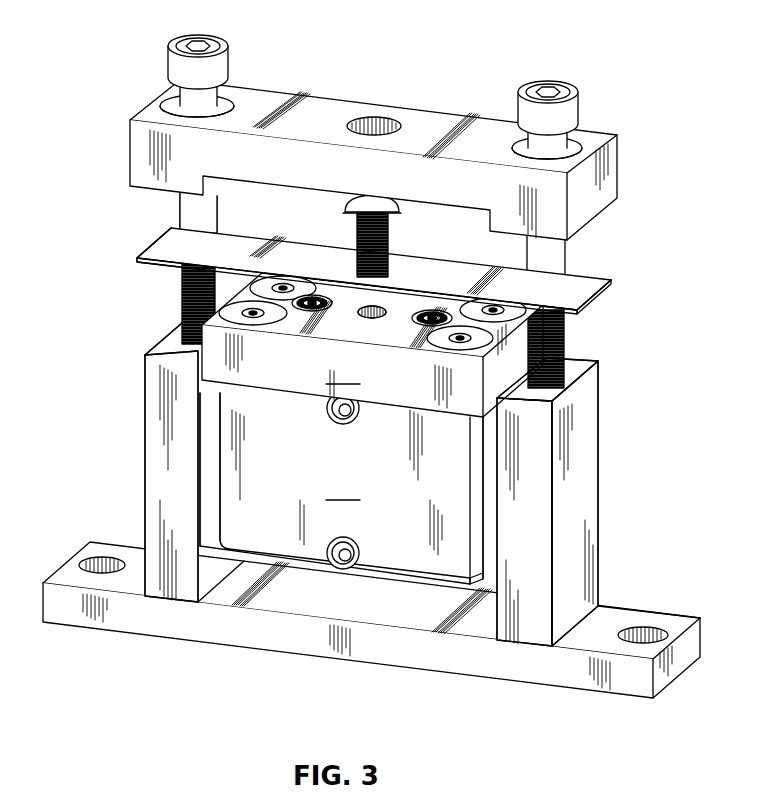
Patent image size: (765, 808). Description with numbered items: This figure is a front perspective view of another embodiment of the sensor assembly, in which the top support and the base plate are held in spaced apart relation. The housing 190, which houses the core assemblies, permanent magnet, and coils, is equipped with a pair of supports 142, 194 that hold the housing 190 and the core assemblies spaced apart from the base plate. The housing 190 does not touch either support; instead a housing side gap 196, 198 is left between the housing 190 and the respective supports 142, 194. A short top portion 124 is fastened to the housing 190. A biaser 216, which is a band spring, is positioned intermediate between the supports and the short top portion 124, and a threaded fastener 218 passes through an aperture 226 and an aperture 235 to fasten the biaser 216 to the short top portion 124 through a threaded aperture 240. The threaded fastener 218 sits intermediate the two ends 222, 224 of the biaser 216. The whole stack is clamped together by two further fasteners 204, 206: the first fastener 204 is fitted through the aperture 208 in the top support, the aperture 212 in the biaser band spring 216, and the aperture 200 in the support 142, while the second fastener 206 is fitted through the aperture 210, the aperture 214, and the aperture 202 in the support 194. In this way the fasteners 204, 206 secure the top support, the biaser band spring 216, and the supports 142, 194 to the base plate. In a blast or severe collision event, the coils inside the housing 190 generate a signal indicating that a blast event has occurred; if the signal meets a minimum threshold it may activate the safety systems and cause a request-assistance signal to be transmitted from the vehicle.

The short top portion 124 is at (372, 345).
The support 142 is at (155, 482).
The housing 190 is at (341, 488).
The support 194 is at (550, 518).
The housing side gap 196 is at (205, 483).
The housing side gap 198 is at (492, 513).
The aperture 200 is at (160, 340).
The aperture 202 is at (578, 370).
The fastener 204 is at (193, 223).
The fastener 206 is at (557, 260).
The aperture 208 is at (228, 101).
The aperture 210 is at (572, 134).
The aperture 212 is at (173, 260).
The aperture 214 is at (580, 278).
The biaser 216 is at (410, 277).
The threaded fastener 218 is at (350, 212).
The end of biaser 222 is at (140, 252).
The end of biaser 224 is at (600, 293).
The aperture 226 is at (378, 117).
The aperture 235 is at (383, 279).
The threaded aperture 240 is at (358, 312).